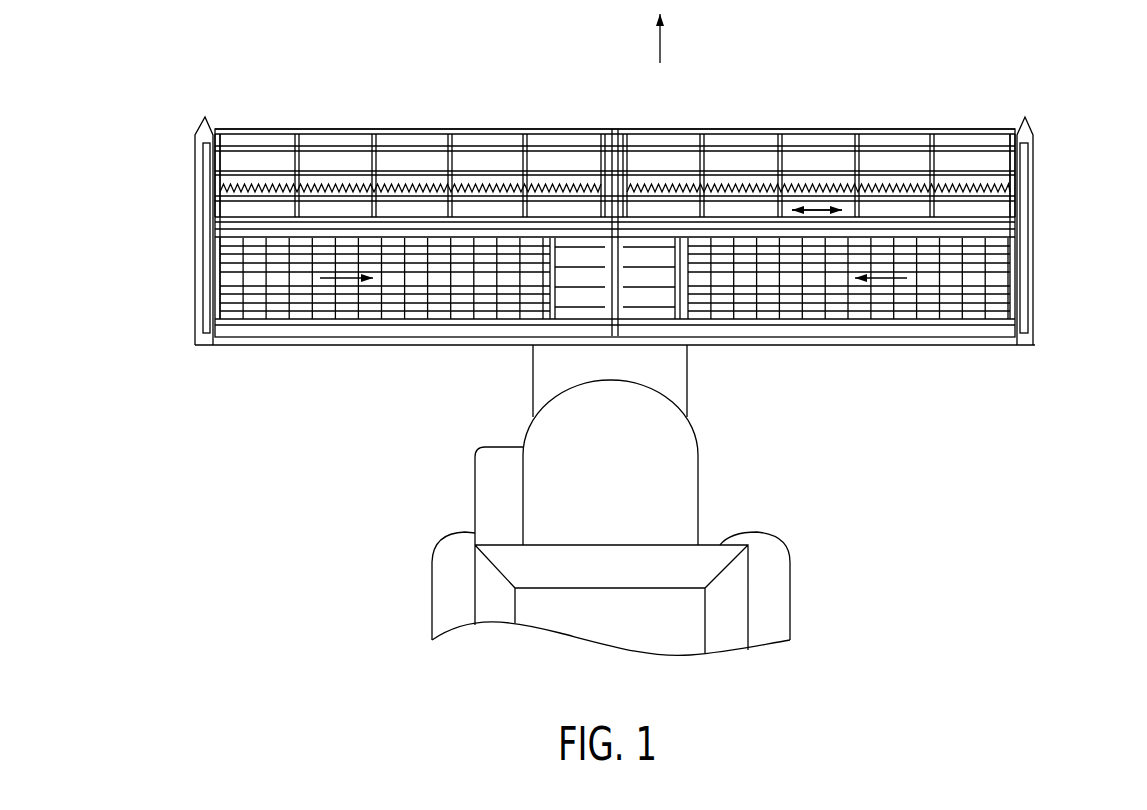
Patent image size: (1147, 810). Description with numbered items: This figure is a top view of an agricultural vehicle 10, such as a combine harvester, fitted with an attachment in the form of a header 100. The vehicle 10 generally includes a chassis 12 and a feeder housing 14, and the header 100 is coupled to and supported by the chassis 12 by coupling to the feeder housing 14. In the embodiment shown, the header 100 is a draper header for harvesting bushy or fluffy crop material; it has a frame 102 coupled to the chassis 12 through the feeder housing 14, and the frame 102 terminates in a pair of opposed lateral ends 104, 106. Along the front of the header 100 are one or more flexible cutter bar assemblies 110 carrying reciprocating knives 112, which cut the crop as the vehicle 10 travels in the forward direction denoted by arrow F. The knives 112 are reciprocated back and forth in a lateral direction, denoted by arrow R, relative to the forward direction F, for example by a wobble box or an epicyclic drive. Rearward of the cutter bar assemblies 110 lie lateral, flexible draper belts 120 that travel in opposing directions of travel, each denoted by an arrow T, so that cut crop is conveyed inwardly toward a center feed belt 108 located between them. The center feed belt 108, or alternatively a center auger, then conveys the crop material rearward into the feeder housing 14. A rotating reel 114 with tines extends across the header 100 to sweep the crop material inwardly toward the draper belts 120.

The agricultural vehicle 10 is at (748, 597).
The chassis 12 is at (698, 473).
The feeder housing 14 is at (683, 373).
The header 100 is at (1053, 341).
The frame 102 is at (438, 345).
The lateral end 104 is at (187, 279).
The lateral end 106 is at (1053, 278).
The center feed belt 108 is at (585, 262).
The cutter bar assembly 110 is at (331, 174).
The reciprocating knives 112 is at (404, 189).
The rotating reel 114 is at (893, 129).
The draper belt 120 is at (243, 293).
The direction of travel arrow T is at (348, 282).
The lateral direction arrow R is at (818, 207).
The forward direction arrow F is at (660, 40).